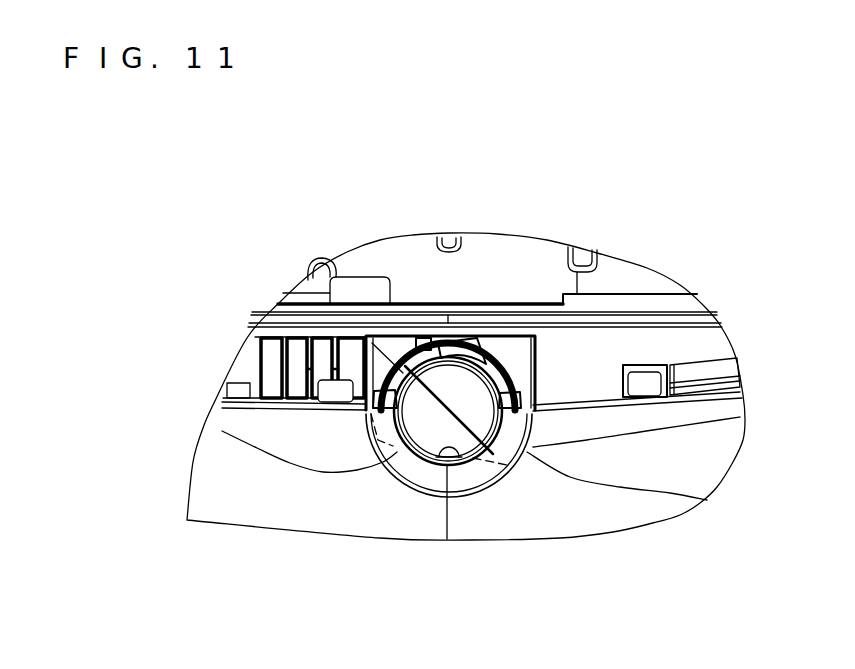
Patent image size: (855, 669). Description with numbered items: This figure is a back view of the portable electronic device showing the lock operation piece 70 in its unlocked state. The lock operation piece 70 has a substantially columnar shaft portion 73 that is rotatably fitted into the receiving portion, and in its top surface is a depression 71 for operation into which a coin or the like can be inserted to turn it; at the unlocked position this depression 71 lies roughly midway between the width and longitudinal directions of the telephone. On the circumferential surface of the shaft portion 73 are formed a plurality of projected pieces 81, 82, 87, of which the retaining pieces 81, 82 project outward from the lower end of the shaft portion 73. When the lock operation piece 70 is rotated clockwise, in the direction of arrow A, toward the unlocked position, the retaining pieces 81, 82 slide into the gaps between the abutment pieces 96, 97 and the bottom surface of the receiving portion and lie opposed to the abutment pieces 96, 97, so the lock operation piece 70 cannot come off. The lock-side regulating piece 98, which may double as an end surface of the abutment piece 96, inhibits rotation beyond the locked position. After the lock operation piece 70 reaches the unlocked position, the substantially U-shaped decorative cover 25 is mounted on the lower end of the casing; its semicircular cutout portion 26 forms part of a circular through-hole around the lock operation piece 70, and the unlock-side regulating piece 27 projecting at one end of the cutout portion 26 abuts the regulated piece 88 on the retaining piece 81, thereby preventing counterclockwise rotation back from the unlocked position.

The decorative cover 25 is at (313, 492).
The cutout portion 26 is at (453, 462).
The unlock-side regulating piece 27 is at (385, 443).
The lock operation piece 70 is at (707, 500).
The depression for operation 71 is at (447, 412).
The shaft portion 73 is at (370, 448).
The retaining piece 81 is at (365, 362).
The retaining piece 82 is at (520, 400).
The projected piece 87 is at (468, 352).
The regulated piece 88 is at (334, 348).
The abutment piece 96 is at (442, 337).
The abutment piece 97 is at (507, 466).
The lock-side regulating piece 98 is at (405, 335).
The arrow A is at (438, 184).